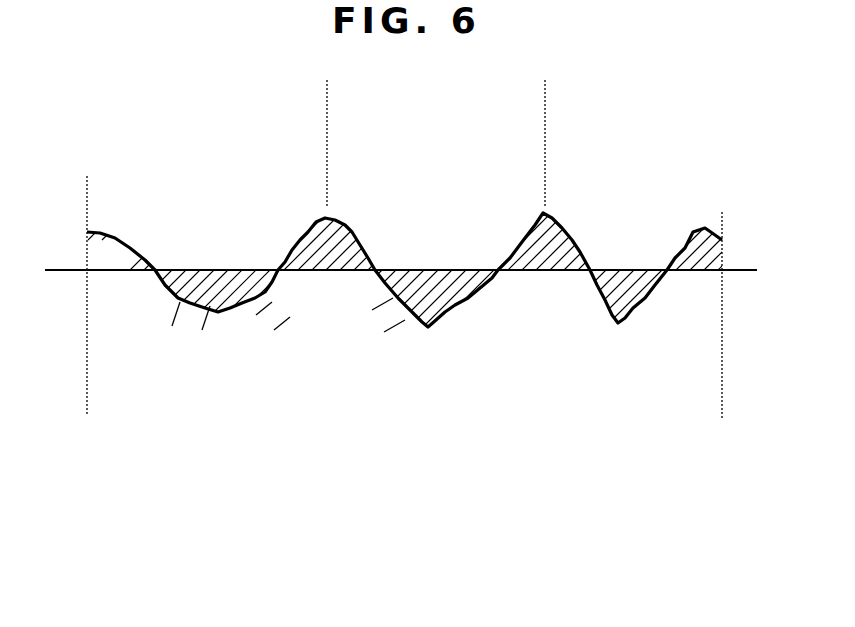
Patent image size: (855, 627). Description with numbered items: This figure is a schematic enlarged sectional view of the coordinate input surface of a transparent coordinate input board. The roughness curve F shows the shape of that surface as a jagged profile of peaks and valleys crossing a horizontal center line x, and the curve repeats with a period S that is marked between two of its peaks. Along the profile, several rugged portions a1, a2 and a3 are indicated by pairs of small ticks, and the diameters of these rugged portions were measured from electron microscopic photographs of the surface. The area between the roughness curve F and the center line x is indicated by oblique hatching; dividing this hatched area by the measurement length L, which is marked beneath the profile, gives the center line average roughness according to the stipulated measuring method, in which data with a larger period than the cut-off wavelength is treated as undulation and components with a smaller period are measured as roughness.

The period S is at (545, 103).
The measurement length L is at (87, 388).
The roughness curve F is at (703, 228).
The center line X is at (745, 269).
The rugged portion a1 is at (220, 326).
The rugged portion a2 is at (258, 300).
The rugged portion a3 is at (400, 337).